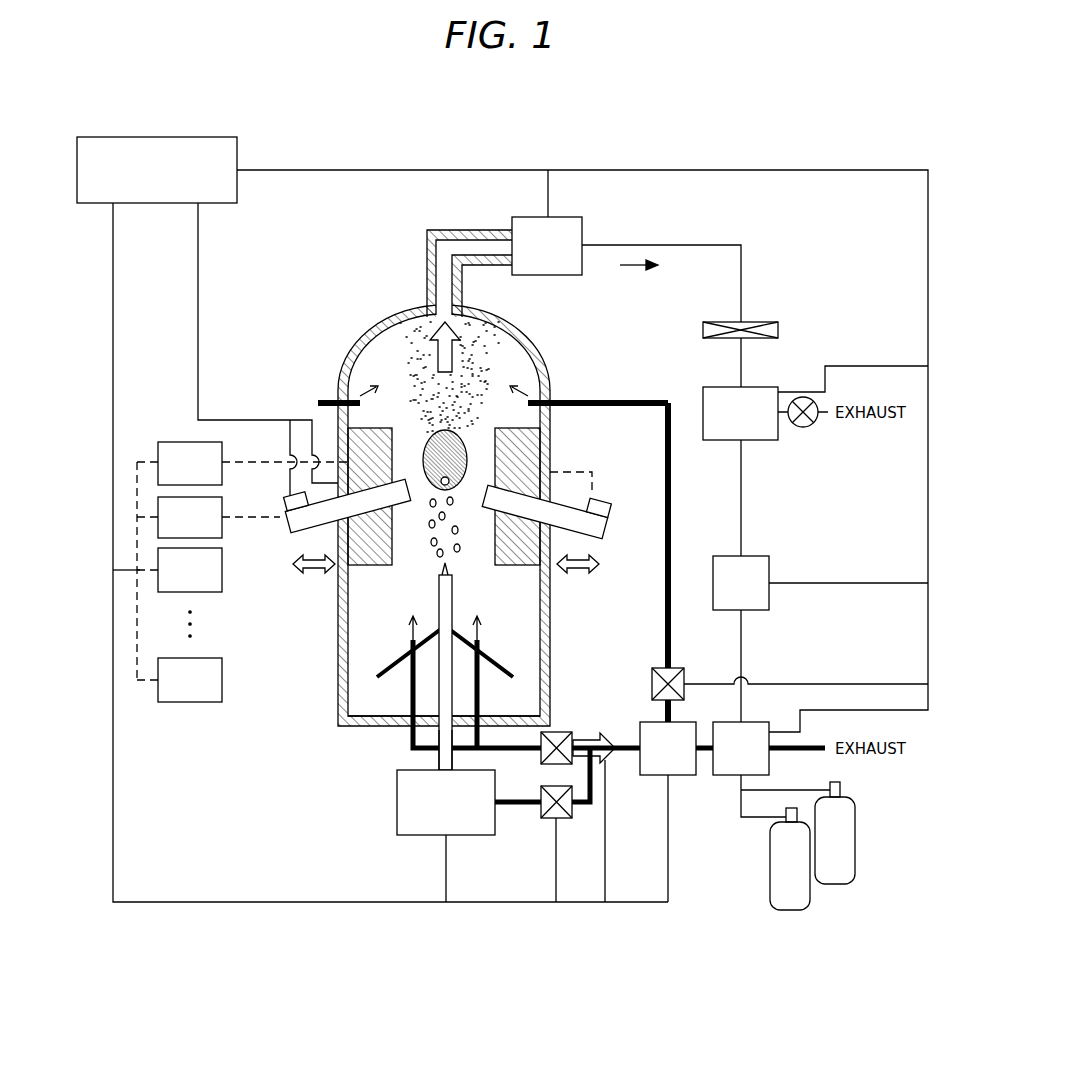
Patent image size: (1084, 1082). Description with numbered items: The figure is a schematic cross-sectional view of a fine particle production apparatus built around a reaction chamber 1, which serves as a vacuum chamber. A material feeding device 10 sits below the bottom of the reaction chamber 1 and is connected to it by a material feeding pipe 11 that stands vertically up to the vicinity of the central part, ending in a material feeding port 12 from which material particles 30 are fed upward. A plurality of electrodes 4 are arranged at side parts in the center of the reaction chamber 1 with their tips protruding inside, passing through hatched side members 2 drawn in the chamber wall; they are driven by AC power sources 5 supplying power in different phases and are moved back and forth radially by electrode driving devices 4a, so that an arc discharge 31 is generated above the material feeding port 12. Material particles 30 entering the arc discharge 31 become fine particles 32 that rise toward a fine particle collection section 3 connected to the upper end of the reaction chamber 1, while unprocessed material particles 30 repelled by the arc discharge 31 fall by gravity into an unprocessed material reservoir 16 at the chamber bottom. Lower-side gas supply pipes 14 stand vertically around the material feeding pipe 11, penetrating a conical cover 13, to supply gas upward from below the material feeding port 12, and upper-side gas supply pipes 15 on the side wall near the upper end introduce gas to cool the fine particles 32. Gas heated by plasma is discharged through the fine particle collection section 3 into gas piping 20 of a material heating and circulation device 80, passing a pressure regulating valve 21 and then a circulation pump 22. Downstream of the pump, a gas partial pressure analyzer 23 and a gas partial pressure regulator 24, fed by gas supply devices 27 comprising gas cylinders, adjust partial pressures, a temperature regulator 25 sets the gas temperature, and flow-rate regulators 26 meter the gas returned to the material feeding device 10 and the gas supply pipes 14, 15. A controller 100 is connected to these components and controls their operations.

The controller 100 is at (152, 137).
The reaction chamber 1 is at (398, 318).
The electrodes 2 is at (521, 476).
The fine particle collection section 3 is at (583, 222).
The electrodes 4 is at (292, 530).
The electrode driving devices 4a is at (285, 498).
The AC power sources 5 is at (190, 442).
The material feeding device 10 is at (397, 811).
The material feeding pipe 11 is at (438, 762).
The material feeding port 12 is at (438, 578).
The conical cover 13 is at (510, 674).
The lower-side gas supply pipes 14 is at (472, 681).
The upper-side gas supply pipes 15 is at (325, 401).
The unprocessed material reservoir 16 is at (507, 697).
The gas piping 20 is at (733, 244).
The pressure regulating valve 21 is at (717, 322).
The circulation pump 22 is at (717, 387).
The gas partial pressure analyzer 23 is at (741, 583).
The gas partial pressure regulator 24 is at (769, 748).
The temperature regulator 25 is at (676, 748).
The flow-rate regulators 26 is at (675, 668).
The gas supply devices 27 is at (790, 910).
The material particles 30 is at (470, 533).
The arc discharge 31 is at (458, 449).
The fine particles 32 is at (503, 372).
The material heating and circulation device 80 is at (778, 372).